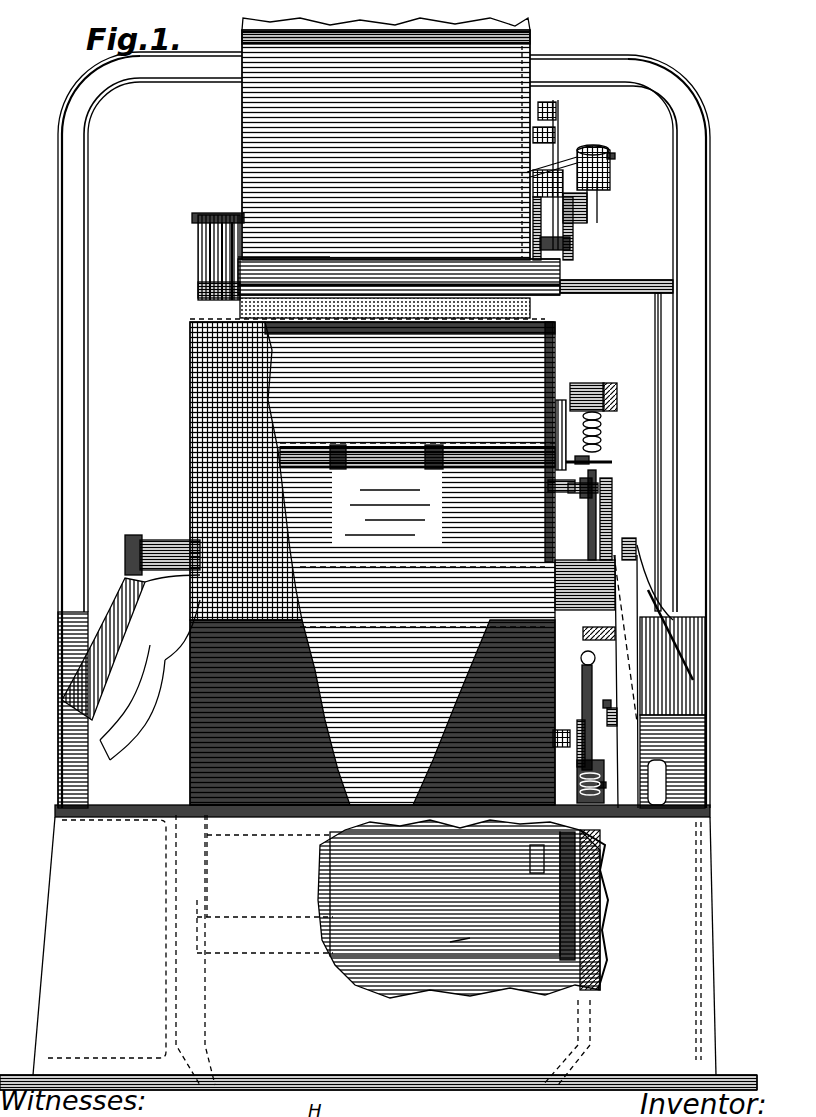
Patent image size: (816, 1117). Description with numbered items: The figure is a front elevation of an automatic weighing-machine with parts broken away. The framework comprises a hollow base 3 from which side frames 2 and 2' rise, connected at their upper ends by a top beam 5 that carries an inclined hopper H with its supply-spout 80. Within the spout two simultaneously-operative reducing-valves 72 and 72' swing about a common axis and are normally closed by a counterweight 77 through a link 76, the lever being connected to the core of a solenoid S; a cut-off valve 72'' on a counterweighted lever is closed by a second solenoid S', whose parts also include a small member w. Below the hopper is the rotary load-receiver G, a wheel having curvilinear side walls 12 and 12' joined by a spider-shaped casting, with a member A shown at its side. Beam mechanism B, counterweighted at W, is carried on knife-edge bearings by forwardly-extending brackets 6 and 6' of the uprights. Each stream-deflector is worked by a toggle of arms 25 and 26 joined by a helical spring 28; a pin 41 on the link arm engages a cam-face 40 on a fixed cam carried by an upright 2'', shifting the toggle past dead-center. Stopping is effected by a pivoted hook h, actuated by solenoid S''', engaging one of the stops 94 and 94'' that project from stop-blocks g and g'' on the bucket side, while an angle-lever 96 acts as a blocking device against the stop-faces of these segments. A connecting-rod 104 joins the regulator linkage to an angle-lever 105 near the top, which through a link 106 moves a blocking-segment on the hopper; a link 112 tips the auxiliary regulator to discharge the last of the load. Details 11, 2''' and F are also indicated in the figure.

The side frame 2 is at (681, 431).
The side frame 2' is at (80, 430).
The top beam 5 is at (636, 66).
The inclined hopper H is at (240, 120).
The counterweight 77 is at (556, 110).
The link 76 is at (560, 134).
The solenoid S is at (557, 160).
The solenoid S' is at (600, 184).
The pin w is at (608, 468).
The supply-spout 80 is at (284, 247).
The reducing-valve 72 is at (399, 267).
The link 106 is at (572, 244).
The angle-lever 105 is at (655, 280).
The reducing-valve 72' is at (203, 256).
The cut-off valve 72'' is at (200, 293).
The side wall 12' is at (354, 311).
The side wall 12 is at (562, 437).
The connecting-rod 104 is at (655, 342).
The cross-hatched member A is at (190, 420).
The load-receiver G is at (372, 563).
The toggle-arm 25 is at (558, 428).
The helical spring 28 is at (602, 444).
The toggle-arm 26 is at (590, 458).
The pin 41 is at (612, 462).
The stop-block g'' is at (542, 487).
The stop 94'' is at (608, 484).
The cam-face 40 is at (612, 516).
The beam mechanism B is at (629, 539).
The counterweight W is at (158, 540).
The bracket 6' is at (111, 691).
The bracket 6 is at (684, 676).
The arm 11 is at (590, 668).
The rod 2''' is at (581, 717).
The stop-block g is at (593, 716).
The hook h is at (603, 704).
The stop 94 is at (577, 741).
The upright 2'' is at (627, 681).
The solenoid S''' is at (610, 799).
The angle-lever 96 is at (528, 852).
The cylinder F is at (460, 935).
The link 112 is at (602, 904).
The hollow base 3 is at (378, 947).